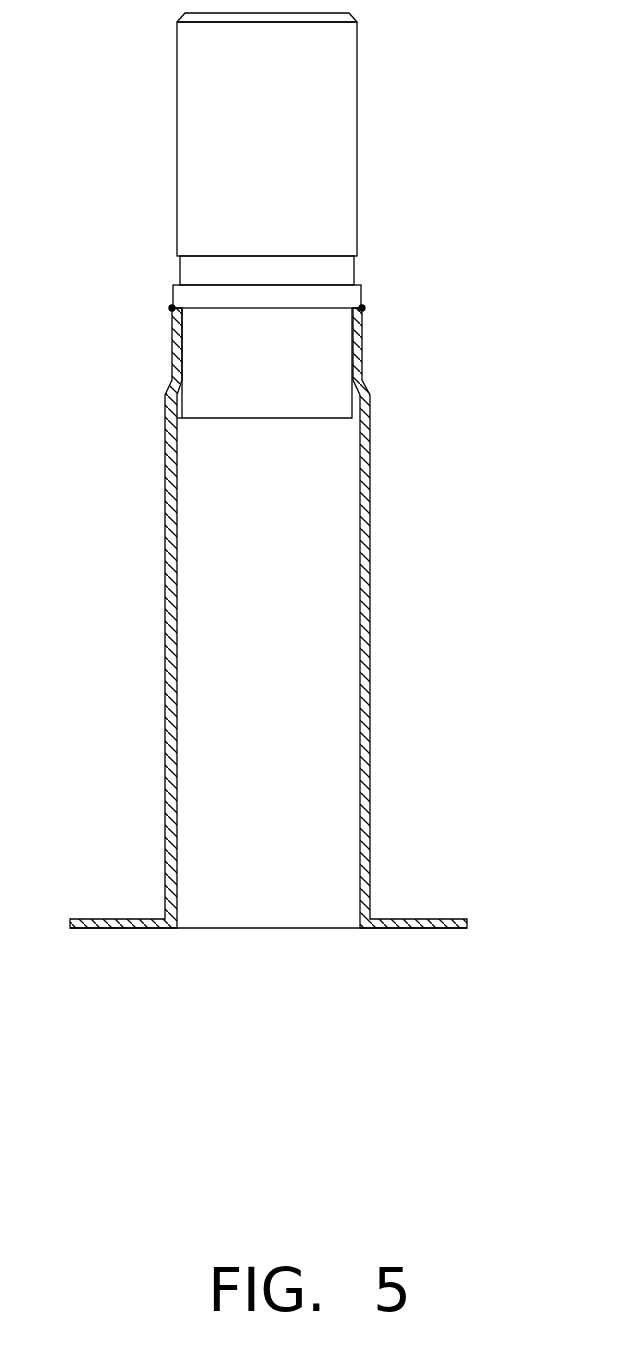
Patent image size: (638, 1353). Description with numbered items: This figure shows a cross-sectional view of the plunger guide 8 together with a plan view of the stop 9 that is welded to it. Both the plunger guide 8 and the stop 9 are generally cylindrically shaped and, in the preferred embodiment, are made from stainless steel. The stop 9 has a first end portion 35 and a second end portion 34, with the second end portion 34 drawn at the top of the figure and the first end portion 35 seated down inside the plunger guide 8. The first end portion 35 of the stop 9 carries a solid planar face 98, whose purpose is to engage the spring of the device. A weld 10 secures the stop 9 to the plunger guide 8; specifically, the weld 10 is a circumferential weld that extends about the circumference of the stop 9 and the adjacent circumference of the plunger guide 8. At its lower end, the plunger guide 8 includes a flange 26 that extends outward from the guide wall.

The plunger guide 8 is at (368, 507).
The stop 9 is at (290, 207).
The weld 10 is at (362, 308).
The flange 26 is at (398, 928).
The second end portion 34 is at (278, 40).
The first end portion 35 is at (268, 388).
The solid planar face 98 is at (222, 418).